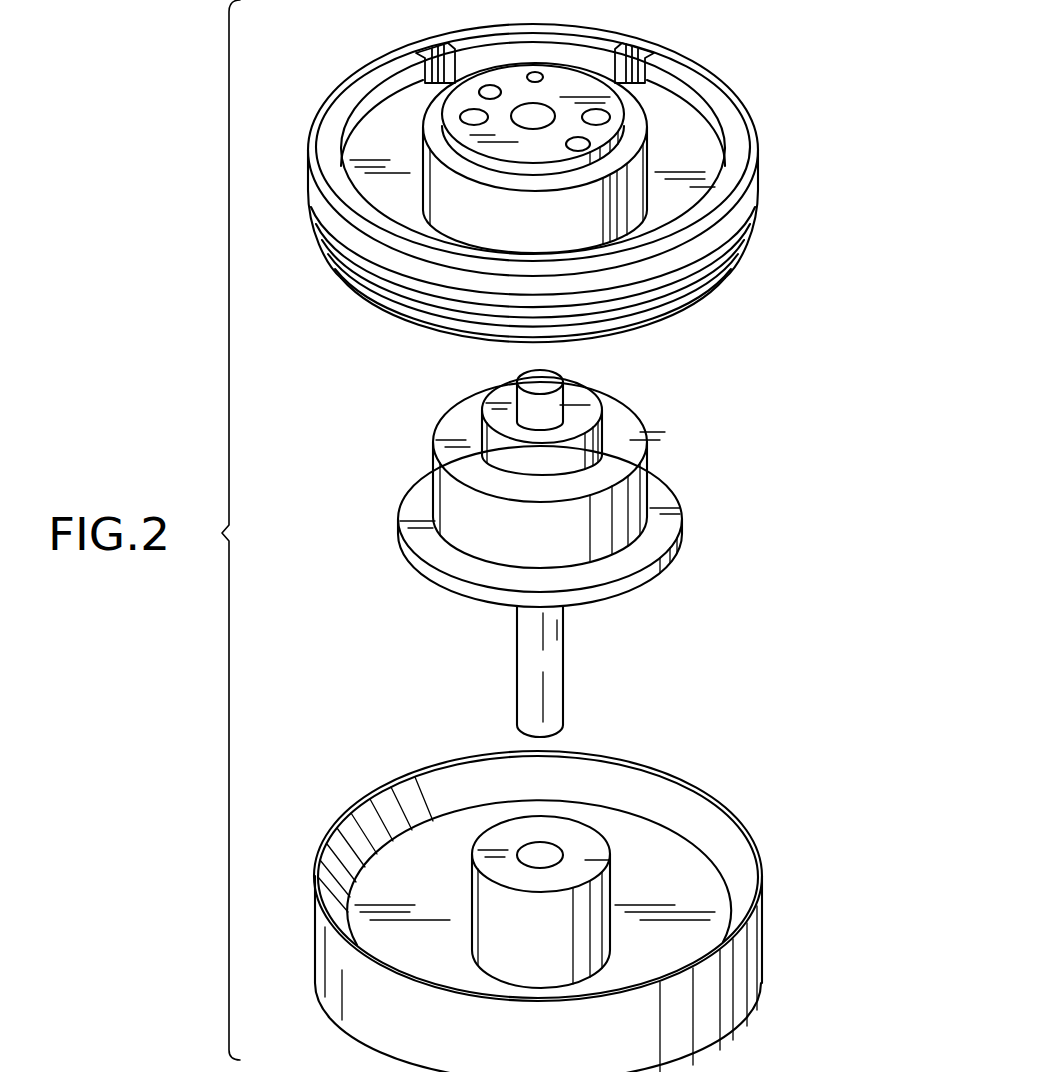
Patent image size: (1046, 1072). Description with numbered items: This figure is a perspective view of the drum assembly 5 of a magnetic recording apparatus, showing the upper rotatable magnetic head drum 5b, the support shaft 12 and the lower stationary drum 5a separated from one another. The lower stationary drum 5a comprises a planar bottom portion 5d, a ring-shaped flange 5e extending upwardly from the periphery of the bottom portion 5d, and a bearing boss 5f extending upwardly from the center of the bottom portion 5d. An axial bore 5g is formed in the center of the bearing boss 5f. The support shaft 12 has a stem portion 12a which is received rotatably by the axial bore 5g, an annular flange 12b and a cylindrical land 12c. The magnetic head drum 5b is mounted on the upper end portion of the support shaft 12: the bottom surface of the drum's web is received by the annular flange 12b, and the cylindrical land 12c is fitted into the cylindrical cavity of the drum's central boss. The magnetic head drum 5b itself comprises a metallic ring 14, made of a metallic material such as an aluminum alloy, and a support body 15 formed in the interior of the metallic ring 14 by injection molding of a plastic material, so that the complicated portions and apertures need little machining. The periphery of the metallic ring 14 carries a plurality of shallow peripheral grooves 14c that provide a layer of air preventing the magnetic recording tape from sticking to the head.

The drum assembly 5 is at (553, 208).
The lower stationary drum 5a is at (592, 895).
The magnetic head drum 5b is at (752, 87).
The bottom portion 5d is at (700, 895).
The ring-shaped flange 5e is at (710, 815).
The bearing boss 5f is at (567, 853).
The axial bore 5g is at (527, 847).
The support shaft 12 is at (584, 553).
The stem portion 12a is at (565, 665).
The annular flange 12b is at (663, 523).
The cylindrical land 12c is at (645, 480).
The metallic ring 14 is at (571, 208).
The peripheral grooves 14c is at (502, 322).
The support body 15 is at (697, 167).